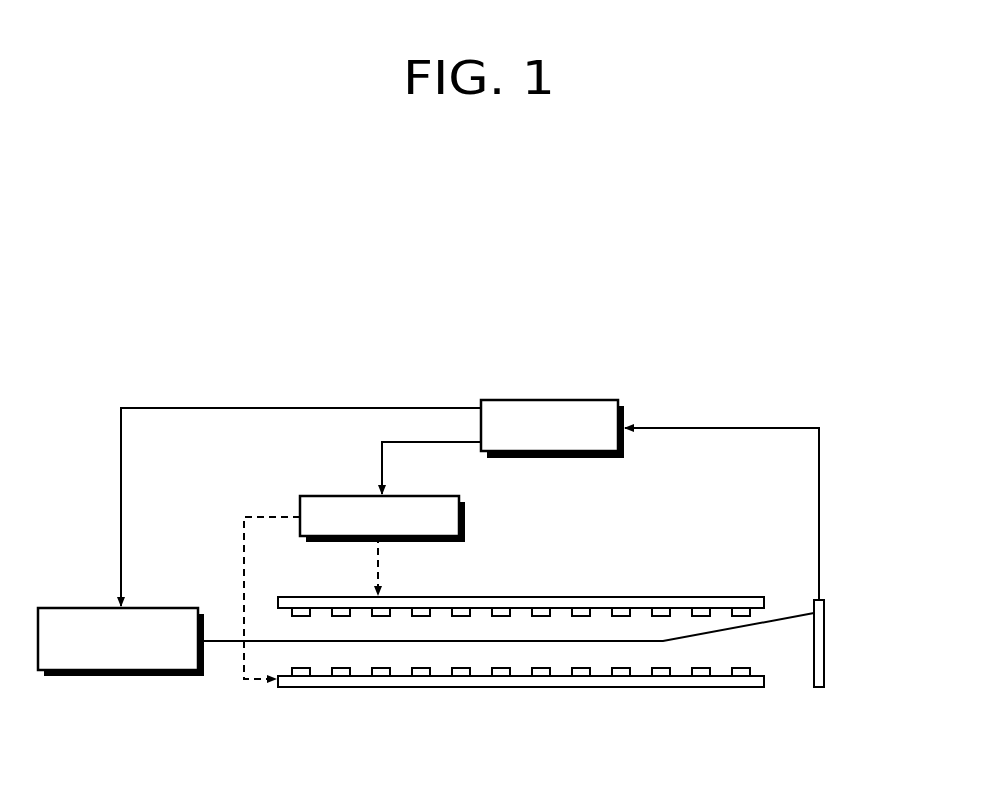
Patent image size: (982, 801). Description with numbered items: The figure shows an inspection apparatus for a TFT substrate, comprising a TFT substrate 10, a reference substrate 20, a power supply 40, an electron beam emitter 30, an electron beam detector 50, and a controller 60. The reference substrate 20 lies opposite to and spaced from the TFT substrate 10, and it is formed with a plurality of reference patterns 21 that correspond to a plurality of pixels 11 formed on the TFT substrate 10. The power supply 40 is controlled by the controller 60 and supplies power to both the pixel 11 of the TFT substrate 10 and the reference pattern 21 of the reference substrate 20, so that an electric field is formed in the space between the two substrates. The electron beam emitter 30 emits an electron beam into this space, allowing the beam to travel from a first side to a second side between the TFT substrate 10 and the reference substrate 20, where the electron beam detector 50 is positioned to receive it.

The TFT substrate 10 is at (495, 687).
The pixel 11 is at (620, 676).
The reference substrate 20 is at (557, 598).
The reference pattern 21 is at (619, 612).
The electron beam emitter 30 is at (118, 676).
The power supply 40 is at (333, 496).
The electron beam detector 50 is at (824, 641).
The controller 60 is at (549, 400).